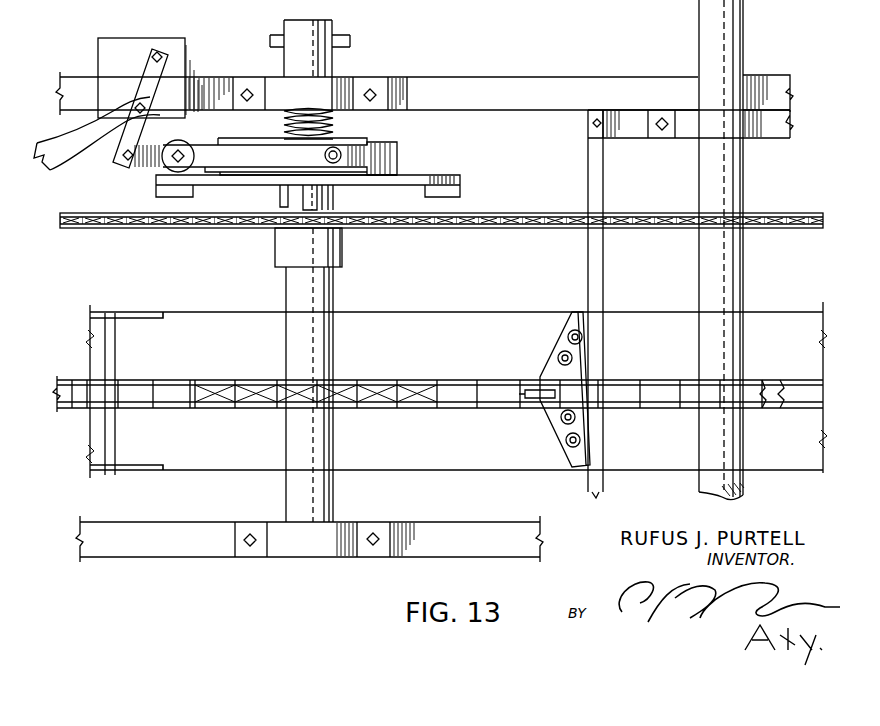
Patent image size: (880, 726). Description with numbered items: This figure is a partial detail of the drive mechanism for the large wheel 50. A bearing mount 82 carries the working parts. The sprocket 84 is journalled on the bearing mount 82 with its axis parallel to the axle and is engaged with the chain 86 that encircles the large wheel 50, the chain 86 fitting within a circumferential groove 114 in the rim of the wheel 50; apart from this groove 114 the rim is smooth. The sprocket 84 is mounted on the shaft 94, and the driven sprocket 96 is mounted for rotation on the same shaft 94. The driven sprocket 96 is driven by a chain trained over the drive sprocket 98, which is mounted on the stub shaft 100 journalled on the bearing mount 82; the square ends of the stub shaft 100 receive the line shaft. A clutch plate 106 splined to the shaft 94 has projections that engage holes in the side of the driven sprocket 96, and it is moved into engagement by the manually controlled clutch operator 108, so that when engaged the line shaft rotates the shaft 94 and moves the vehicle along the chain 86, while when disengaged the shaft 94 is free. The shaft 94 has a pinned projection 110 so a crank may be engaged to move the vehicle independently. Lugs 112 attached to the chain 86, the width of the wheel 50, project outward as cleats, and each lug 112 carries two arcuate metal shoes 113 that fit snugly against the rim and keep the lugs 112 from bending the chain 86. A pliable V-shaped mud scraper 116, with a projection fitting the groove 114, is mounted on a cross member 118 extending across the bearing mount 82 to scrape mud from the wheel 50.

The large wheel 50 is at (480, 467).
The bearing mount 82 is at (613, 75).
The sprocket 84 is at (418, 402).
The chain 86 is at (492, 402).
The shaft 94 is at (330, 297).
The driven sprocket 96 is at (366, 229).
The drive sprocket 98 is at (768, 212).
The stub shaft 100 is at (740, 293).
The clutch plate 106 is at (412, 175).
The clutch operator 108 is at (120, 180).
The pinned projection 110 is at (350, 37).
The lugs 112 is at (115, 367).
The arcuate metal shoes 113 is at (137, 312).
The circumferential groove 114 is at (790, 394).
The mud scraper 116 is at (555, 428).
The cross member 118 is at (602, 457).